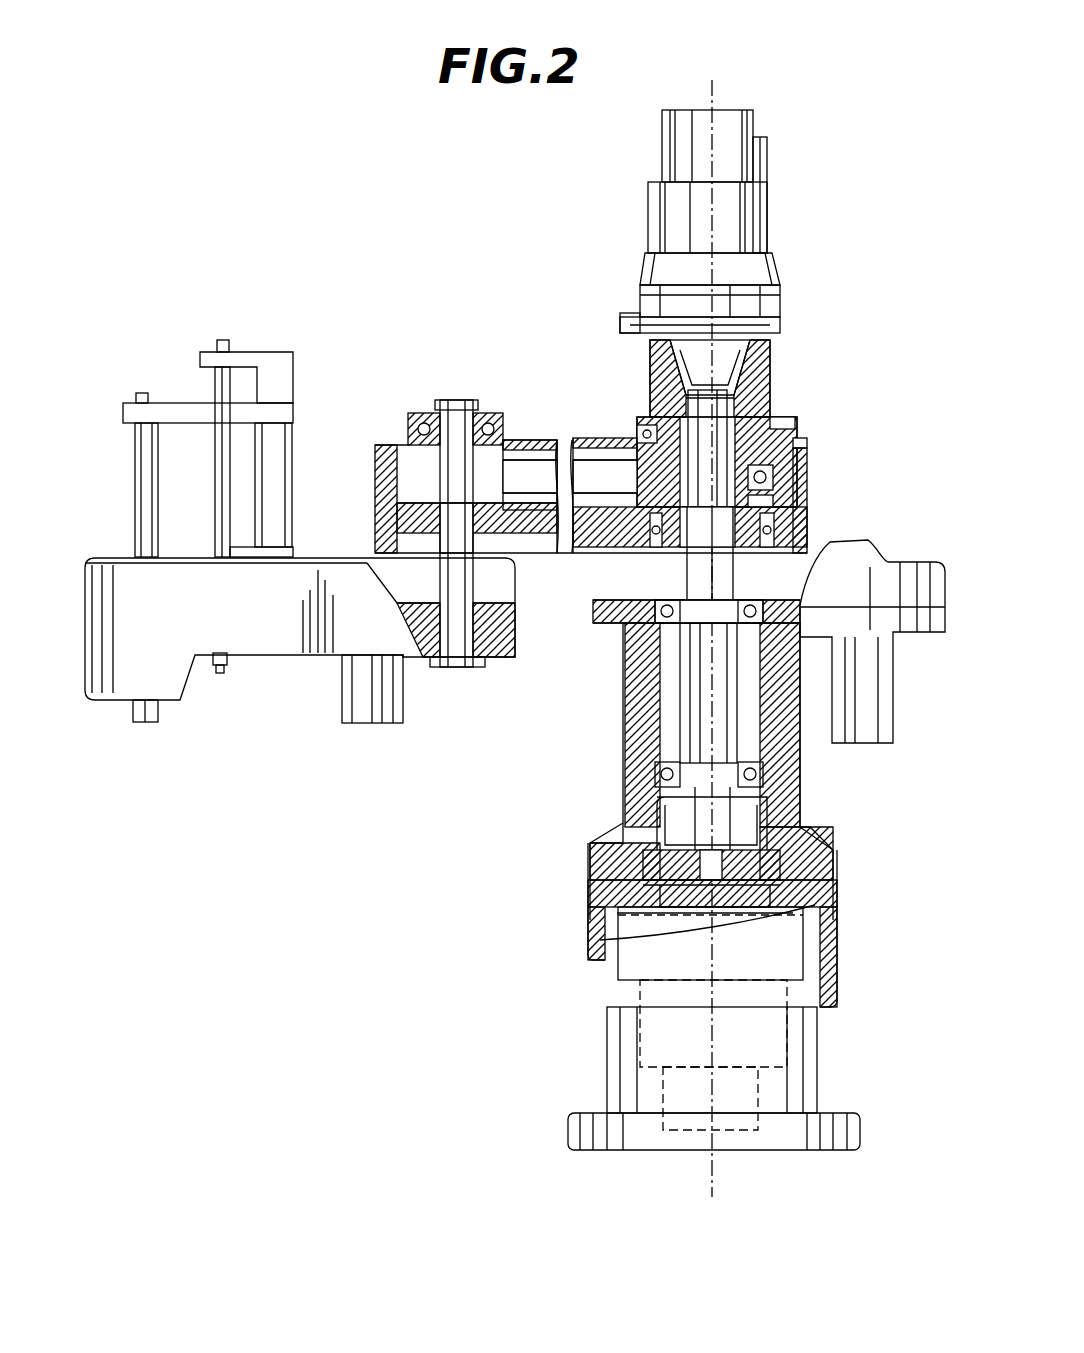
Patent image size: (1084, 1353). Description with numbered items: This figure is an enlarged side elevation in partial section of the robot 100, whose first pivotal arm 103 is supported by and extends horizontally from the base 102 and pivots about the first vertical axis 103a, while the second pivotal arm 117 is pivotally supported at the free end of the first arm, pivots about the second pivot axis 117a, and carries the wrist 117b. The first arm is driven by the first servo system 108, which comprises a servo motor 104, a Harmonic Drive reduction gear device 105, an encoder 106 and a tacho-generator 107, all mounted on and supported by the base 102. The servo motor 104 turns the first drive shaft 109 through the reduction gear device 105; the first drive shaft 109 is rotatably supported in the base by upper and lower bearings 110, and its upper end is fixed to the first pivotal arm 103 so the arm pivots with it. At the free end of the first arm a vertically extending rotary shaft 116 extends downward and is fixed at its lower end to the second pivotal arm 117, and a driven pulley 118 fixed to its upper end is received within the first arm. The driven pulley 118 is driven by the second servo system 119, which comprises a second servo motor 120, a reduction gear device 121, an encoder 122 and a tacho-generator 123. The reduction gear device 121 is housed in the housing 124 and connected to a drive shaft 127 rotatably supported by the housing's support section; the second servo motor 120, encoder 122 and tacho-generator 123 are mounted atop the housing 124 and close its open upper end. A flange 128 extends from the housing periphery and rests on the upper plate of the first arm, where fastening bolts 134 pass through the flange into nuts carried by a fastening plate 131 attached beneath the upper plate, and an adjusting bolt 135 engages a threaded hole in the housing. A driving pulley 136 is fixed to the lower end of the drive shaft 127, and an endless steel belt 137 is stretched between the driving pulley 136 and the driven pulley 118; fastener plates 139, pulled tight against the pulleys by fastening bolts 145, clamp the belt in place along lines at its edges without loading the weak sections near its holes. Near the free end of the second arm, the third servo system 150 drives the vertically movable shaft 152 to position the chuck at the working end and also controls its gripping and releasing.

The robot 100 is at (548, 365).
The base 102 is at (790, 763).
The first pivotal arm 103 is at (592, 438).
The first vertical axis 103a is at (716, 1160).
The servo motor 104 is at (840, 947).
The reduction gear device 105 is at (760, 825).
The encoder 106 is at (820, 1032).
The tacho-generator 107 is at (807, 1090).
The first servo system 108 is at (588, 909).
The first drive shaft 109 is at (690, 703).
The upper and lower bearings 110 is at (628, 648).
The rotary shaft 116 is at (487, 413).
The second pivotal arm 117 is at (280, 655).
The second pivot axis 117a is at (717, 67).
The wrist 117b is at (145, 723).
The driven pulley 118 is at (397, 440).
The second servo system 119 is at (705, 206).
The second servo motor 120 is at (758, 273).
The reduction gear device 121 is at (770, 360).
The encoder 122 is at (760, 214).
The tacho-generator 123 is at (733, 128).
The housing 124 is at (767, 384).
The drive shaft 127 is at (643, 408).
The flange 128 is at (780, 434).
The fastening plate 131 is at (640, 430).
The fastening bolts 134 is at (773, 422).
The adjusting bolt 135 is at (793, 447).
The driving pulley 136 is at (807, 533).
The steel belt 137 is at (527, 473).
The fastener plates 139 is at (760, 500).
The fastening bolts 145 is at (767, 484).
The third servo system 150 is at (181, 431).
The vertically movable shaft 152 is at (143, 520).